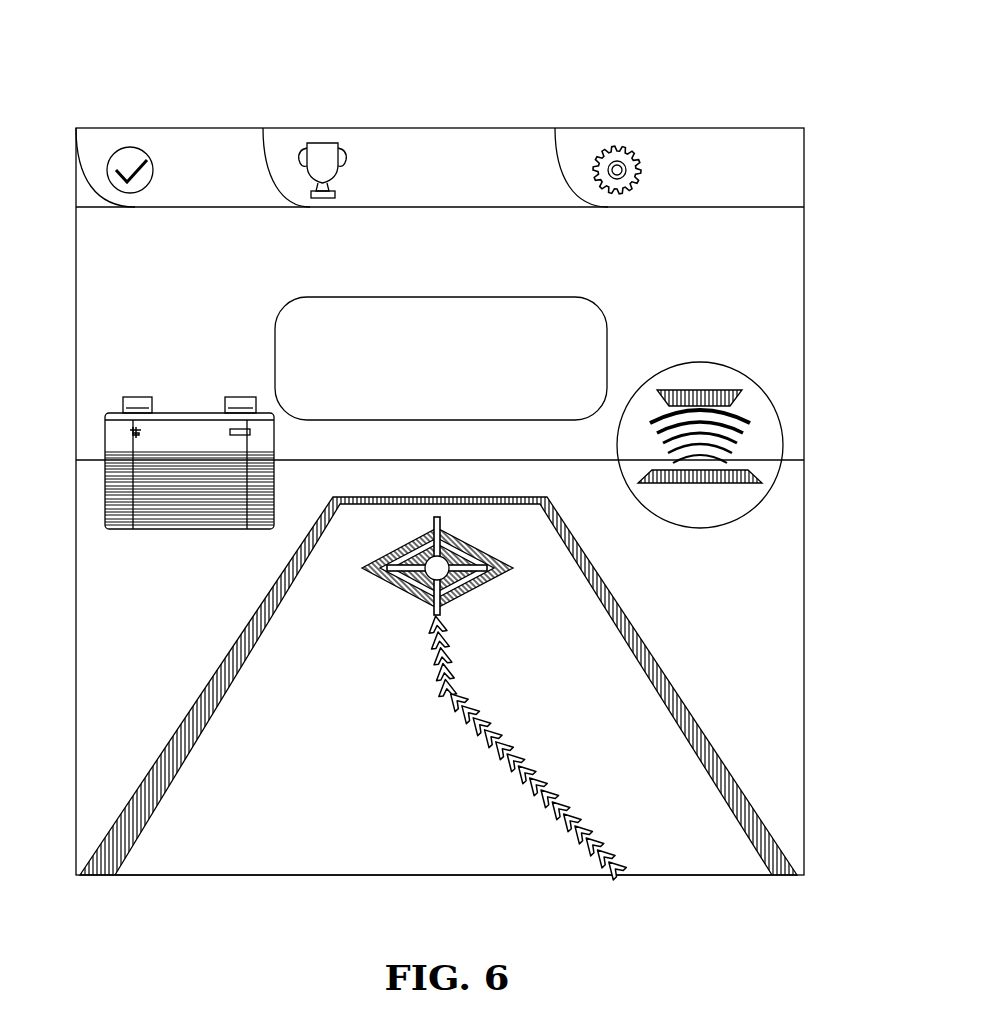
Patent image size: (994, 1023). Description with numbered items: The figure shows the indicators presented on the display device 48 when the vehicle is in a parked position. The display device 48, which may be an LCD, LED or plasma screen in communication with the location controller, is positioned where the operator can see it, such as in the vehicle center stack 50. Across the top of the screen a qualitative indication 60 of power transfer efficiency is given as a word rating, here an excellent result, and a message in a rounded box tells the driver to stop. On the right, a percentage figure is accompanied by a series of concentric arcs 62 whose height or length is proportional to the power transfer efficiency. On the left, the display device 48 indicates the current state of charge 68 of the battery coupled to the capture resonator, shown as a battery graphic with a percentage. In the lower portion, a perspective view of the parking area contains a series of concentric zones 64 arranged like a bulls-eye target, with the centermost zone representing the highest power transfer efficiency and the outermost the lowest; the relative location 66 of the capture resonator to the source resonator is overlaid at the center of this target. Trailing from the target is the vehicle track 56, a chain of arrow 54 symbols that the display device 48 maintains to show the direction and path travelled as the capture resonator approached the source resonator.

The display device 48 is at (733, 102).
The vehicle center stack 50 is at (333, 316).
The arrow 54 is at (453, 707).
The vehicle track 56 is at (500, 743).
The qualitative indication of power transfer efficiency 60 is at (613, 240).
The series of concentric arcs 62 is at (750, 436).
The series of concentric zones 64 is at (408, 578).
The relative location 66 is at (440, 571).
The current state of charge 68 is at (110, 460).